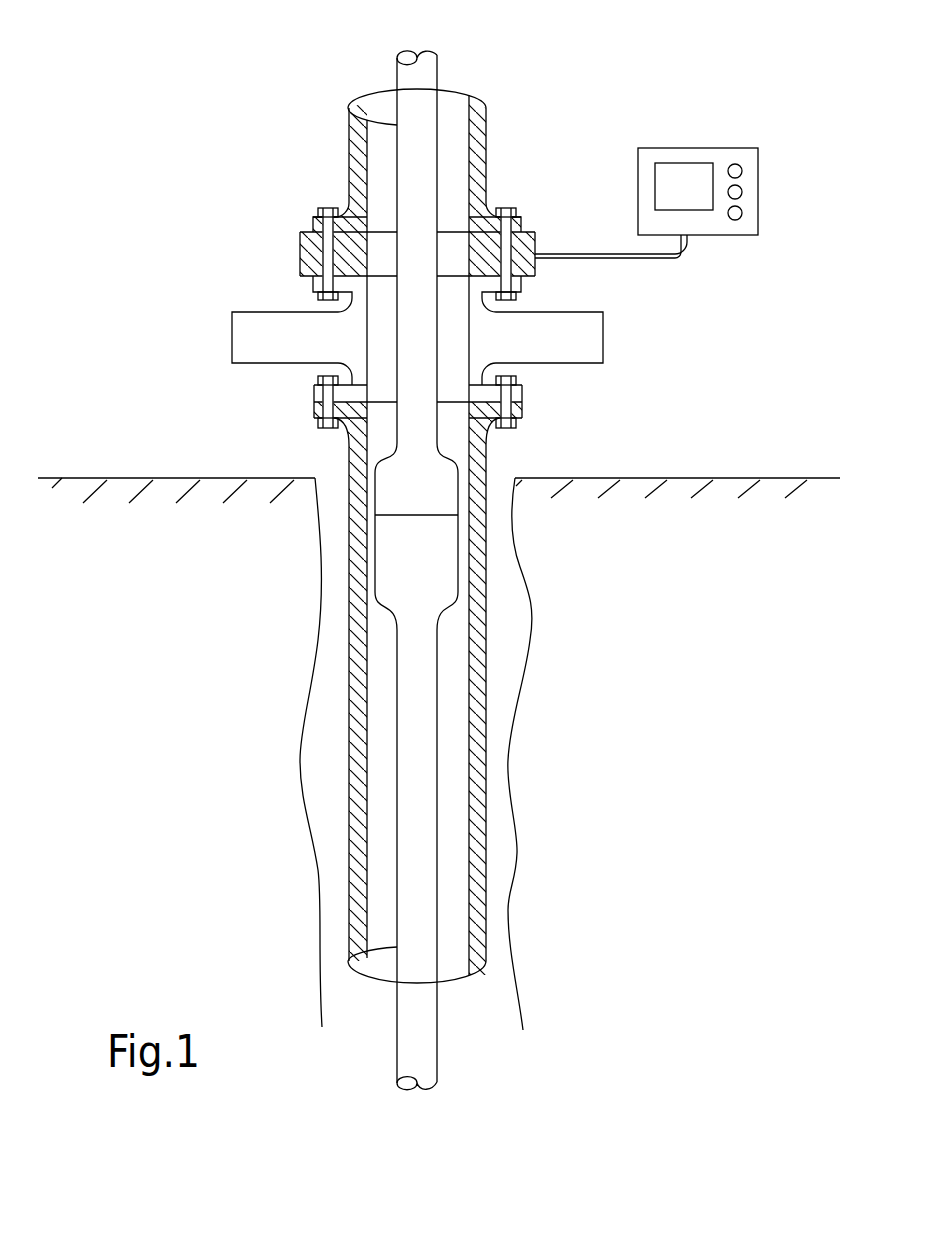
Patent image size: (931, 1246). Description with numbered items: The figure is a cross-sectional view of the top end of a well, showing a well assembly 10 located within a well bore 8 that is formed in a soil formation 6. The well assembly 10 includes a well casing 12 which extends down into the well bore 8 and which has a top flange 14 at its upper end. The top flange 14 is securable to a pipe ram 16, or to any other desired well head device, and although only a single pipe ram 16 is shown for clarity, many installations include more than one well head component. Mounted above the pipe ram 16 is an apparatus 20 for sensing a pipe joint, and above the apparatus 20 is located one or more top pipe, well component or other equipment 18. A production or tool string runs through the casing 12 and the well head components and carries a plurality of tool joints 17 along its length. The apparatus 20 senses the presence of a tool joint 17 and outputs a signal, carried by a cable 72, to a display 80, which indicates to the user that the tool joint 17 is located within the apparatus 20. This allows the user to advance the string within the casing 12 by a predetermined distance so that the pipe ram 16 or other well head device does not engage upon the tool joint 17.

The soil formation 6 is at (718, 520).
The well bore 8 is at (505, 605).
The well assembly 10 is at (535, 120).
The well casing 12 is at (347, 510).
The top flange 14 is at (314, 408).
The pipe ram 16 is at (607, 340).
The tool joint 17 is at (428, 496).
The top pipe, well component or other equipment 18 is at (352, 155).
The apparatus for sensing a pipe joint 20 is at (300, 253).
The cable 72 is at (645, 260).
The display 80 is at (423, 70).